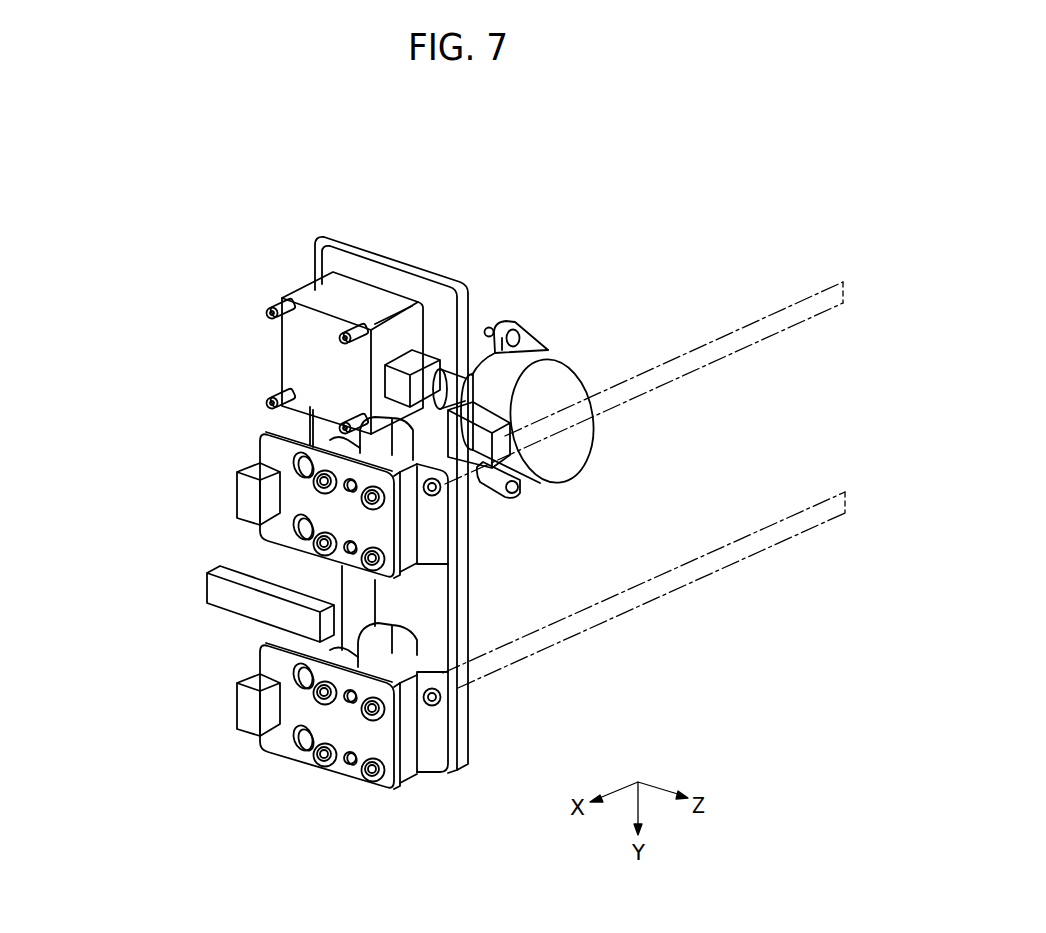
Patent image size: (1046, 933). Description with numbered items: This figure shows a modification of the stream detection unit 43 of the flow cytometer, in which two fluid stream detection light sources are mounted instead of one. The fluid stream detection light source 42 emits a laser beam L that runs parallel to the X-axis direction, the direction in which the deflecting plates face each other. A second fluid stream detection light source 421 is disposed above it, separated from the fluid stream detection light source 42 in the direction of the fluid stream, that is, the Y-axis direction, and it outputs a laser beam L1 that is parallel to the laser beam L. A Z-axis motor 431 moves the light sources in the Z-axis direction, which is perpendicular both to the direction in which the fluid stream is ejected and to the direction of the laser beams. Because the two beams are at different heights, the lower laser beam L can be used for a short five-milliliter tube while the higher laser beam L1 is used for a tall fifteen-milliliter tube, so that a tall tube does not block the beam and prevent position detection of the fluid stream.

The stream detection unit 43 is at (470, 289).
The Z-axis motor 431 is at (558, 358).
The fluid stream detection light source 421 is at (262, 441).
The fluid stream detection light source 42 is at (260, 650).
The laser beam L1 is at (738, 352).
The laser beam L is at (750, 557).